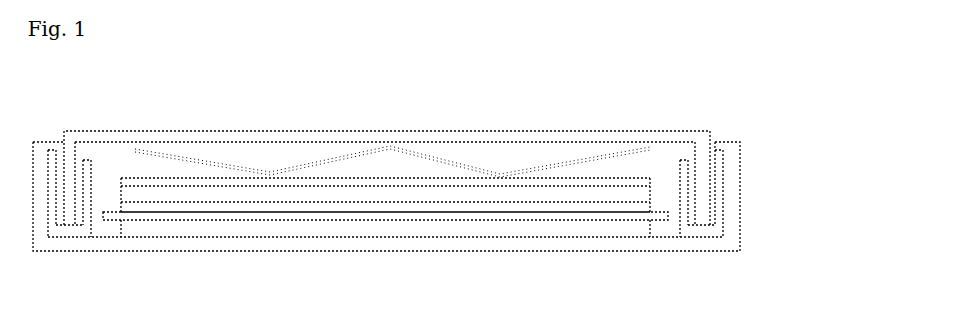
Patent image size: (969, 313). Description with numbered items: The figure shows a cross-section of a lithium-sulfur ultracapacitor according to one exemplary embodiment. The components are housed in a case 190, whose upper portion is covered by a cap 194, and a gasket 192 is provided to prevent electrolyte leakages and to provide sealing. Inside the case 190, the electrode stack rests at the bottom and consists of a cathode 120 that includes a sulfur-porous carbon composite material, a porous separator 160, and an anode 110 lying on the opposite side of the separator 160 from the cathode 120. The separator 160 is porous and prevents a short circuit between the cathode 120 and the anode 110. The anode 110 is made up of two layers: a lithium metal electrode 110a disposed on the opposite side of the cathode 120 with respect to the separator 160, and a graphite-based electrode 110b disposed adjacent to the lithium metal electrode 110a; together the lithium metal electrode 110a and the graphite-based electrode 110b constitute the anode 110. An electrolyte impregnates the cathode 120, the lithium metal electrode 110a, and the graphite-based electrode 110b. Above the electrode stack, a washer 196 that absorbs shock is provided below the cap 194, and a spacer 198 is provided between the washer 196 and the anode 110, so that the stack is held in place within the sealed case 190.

The anode 110 is at (622, 77).
The lithium metal electrode 110a is at (627, 205).
The graphite-based electrode 110b is at (582, 190).
The cathode 120 is at (597, 228).
The separator 160 is at (522, 215).
The case 190 is at (735, 217).
The gasket 192 is at (717, 175).
The cap 194 is at (345, 133).
The washer 196 is at (427, 158).
The spacer 198 is at (537, 180).